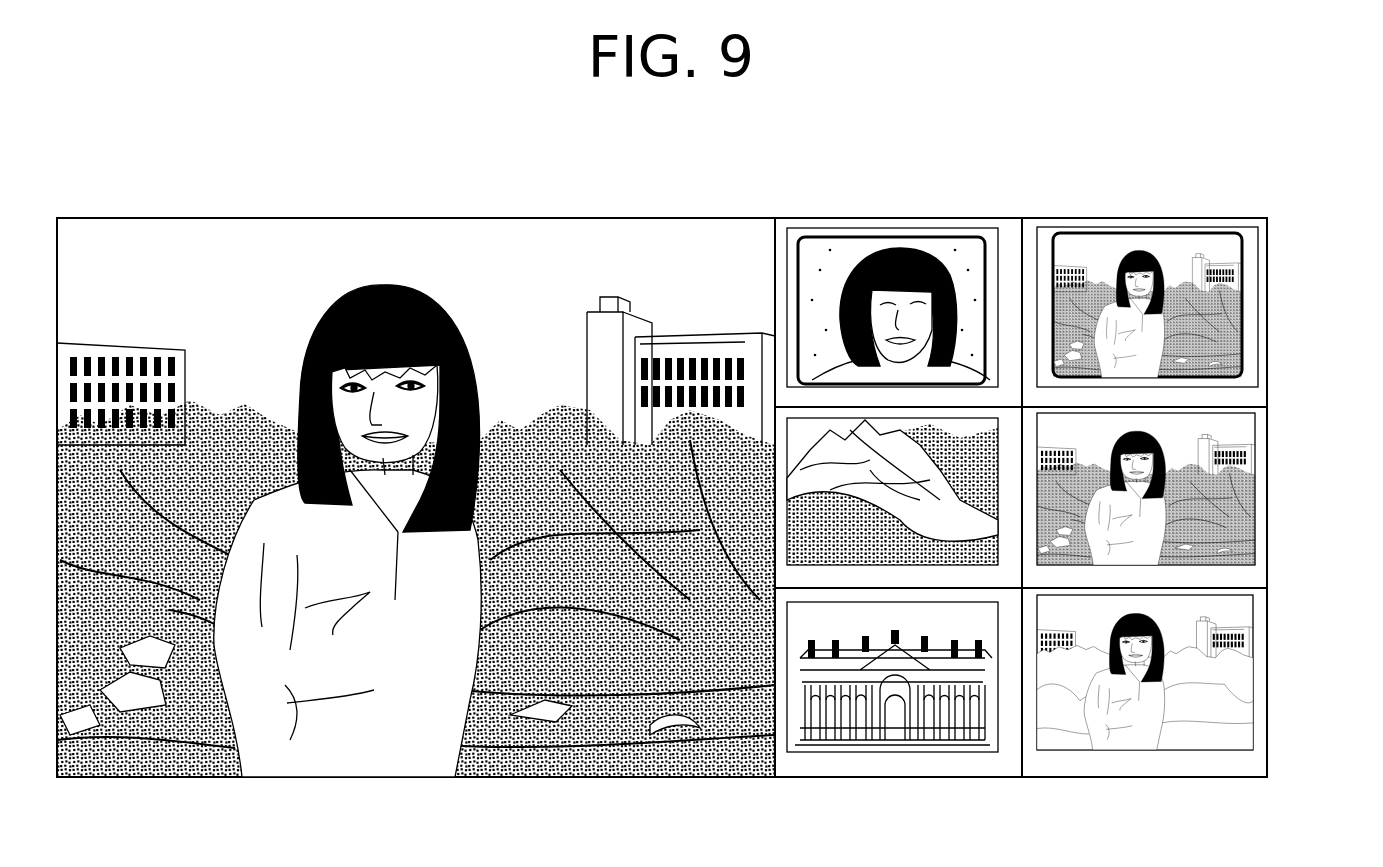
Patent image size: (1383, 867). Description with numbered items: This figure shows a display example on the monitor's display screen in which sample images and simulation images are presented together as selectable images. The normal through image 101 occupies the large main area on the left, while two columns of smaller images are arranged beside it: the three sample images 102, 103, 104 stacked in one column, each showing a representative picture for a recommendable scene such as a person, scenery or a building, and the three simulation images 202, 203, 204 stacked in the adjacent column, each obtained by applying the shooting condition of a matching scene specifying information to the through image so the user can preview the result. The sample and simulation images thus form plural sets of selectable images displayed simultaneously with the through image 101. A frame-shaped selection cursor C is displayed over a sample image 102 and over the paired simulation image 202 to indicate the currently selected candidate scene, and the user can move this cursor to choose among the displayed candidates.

The through image 101 is at (200, 230).
The sample image 102 is at (858, 228).
The sample image 103 is at (1000, 547).
The sample image 104 is at (850, 750).
The simulation image 202 is at (1257, 288).
The simulation image 203 is at (1257, 468).
The simulation image 204 is at (1257, 650).
The selection cursor C is at (966, 240).